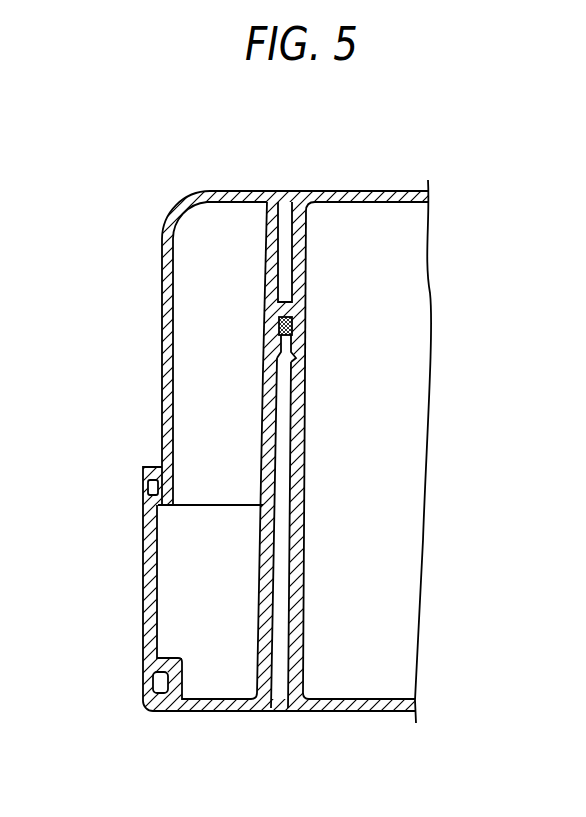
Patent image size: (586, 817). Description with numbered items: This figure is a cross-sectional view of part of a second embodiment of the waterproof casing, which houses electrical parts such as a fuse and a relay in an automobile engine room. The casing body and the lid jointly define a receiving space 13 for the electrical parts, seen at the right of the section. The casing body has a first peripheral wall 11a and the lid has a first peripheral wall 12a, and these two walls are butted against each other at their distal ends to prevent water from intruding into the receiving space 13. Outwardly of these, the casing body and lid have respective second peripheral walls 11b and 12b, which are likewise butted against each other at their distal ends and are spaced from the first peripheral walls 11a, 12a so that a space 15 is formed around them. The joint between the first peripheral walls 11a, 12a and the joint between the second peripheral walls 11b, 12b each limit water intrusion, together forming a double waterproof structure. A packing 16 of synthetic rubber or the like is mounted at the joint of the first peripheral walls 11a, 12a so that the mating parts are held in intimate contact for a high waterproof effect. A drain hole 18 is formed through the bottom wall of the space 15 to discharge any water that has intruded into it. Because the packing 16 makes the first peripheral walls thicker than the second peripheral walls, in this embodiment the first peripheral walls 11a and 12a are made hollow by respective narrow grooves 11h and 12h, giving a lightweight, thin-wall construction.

The first peripheral wall of the casing body 11a is at (258, 638).
The second peripheral wall of the casing body 11b is at (143, 565).
The narrow groove of the casing body first peripheral wall 11h is at (279, 700).
The first peripheral wall of the lid 12a is at (308, 249).
The second peripheral wall of the lid 12b is at (162, 302).
The narrow groove of the lid first peripheral wall 12h is at (290, 242).
The receiving space 13 is at (405, 578).
The space 15 is at (245, 243).
The packing 16 is at (306, 352).
The drain hole 18 is at (160, 695).